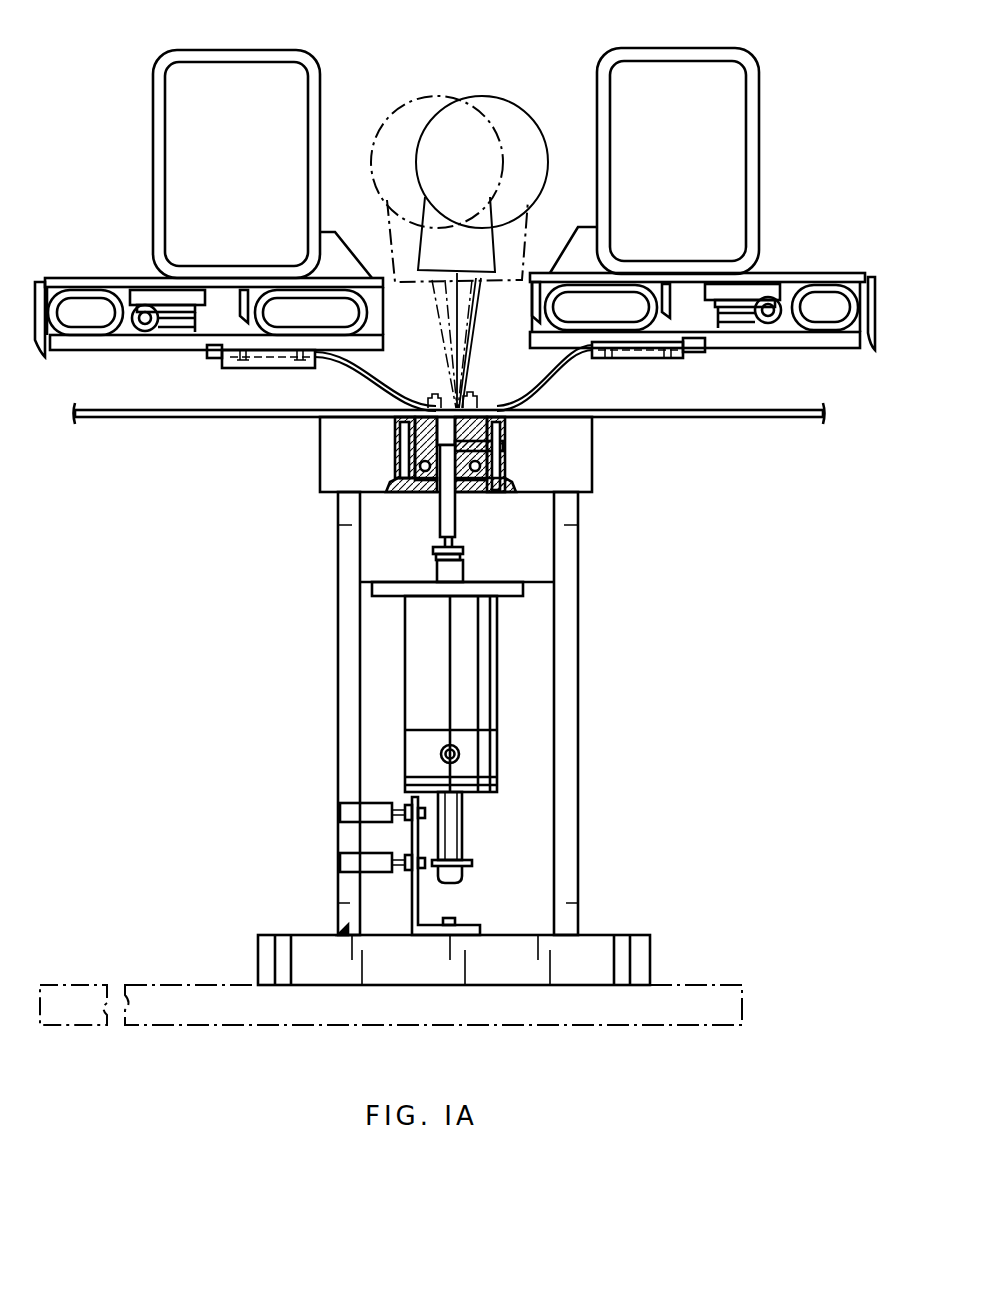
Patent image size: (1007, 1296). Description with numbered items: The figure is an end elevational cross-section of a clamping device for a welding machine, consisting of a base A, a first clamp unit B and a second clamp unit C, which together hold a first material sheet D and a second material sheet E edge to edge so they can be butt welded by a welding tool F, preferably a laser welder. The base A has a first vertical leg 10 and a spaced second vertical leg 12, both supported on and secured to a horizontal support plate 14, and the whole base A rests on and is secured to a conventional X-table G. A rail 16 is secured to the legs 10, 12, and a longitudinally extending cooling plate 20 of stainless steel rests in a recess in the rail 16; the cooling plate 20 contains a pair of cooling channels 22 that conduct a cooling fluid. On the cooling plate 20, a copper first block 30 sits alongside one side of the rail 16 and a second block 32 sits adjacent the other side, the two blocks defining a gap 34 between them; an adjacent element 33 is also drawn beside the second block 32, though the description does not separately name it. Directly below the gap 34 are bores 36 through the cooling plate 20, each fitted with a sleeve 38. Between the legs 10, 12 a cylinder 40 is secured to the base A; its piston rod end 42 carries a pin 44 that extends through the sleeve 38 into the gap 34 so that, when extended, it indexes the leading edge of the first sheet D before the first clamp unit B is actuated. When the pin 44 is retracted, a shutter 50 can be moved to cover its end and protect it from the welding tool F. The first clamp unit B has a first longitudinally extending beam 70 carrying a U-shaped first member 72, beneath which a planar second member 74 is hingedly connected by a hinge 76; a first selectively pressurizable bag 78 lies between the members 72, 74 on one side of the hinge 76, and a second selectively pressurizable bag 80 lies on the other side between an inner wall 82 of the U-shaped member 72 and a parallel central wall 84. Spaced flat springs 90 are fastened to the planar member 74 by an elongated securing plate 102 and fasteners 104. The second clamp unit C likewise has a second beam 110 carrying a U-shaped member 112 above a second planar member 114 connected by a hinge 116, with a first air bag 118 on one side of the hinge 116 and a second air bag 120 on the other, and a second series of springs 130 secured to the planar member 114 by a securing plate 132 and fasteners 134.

The first vertical leg 10 is at (572, 732).
The second vertical leg 12 is at (340, 668).
The horizontal support plate 14 is at (590, 948).
The rail 16 is at (578, 458).
The cooling plate 20 is at (510, 466).
The cooling channels 22 is at (415, 486).
The first block 30 is at (516, 418).
The second block 32 is at (398, 440).
The bearing 33 is at (398, 465).
The gap 34 is at (470, 405).
The bores 36 is at (451, 482).
The sleeve 38 is at (438, 484).
The cylinder 40 is at (480, 690).
The piston rod end 42 is at (470, 568).
The pin 44 is at (463, 534).
The shutter 50 is at (505, 446).
The first longitudinally extending beam 70 is at (753, 128).
The U-shaped first member 72 is at (781, 273).
The planar second member 74 is at (832, 348).
The hinge 76 is at (770, 322).
The first selectively pressurizable bag 78 is at (828, 305).
The second selectively pressurizable bag 80 is at (608, 305).
The inner wall 82 is at (535, 303).
The central wall 84 is at (680, 292).
The flat springs 90 is at (548, 370).
The securing plate 102 is at (640, 356).
The fasteners 104 is at (700, 357).
The second beam 110 is at (156, 113).
The U-shaped member 112 is at (97, 283).
The second planar member 114 is at (68, 340).
The hinge 116 is at (138, 328).
The first air bag 118 is at (70, 310).
The second air bag 120 is at (280, 305).
The second series of springs 130 is at (352, 372).
The securing plate 132 is at (258, 368).
The fasteners 134 is at (220, 366).
The base A is at (336, 748).
The first clamp unit B is at (646, 40).
The second clamp unit C is at (268, 40).
The first material sheet D is at (737, 424).
The second material sheet E is at (185, 424).
The welding tool F is at (428, 92).
The X-table G is at (690, 1000).